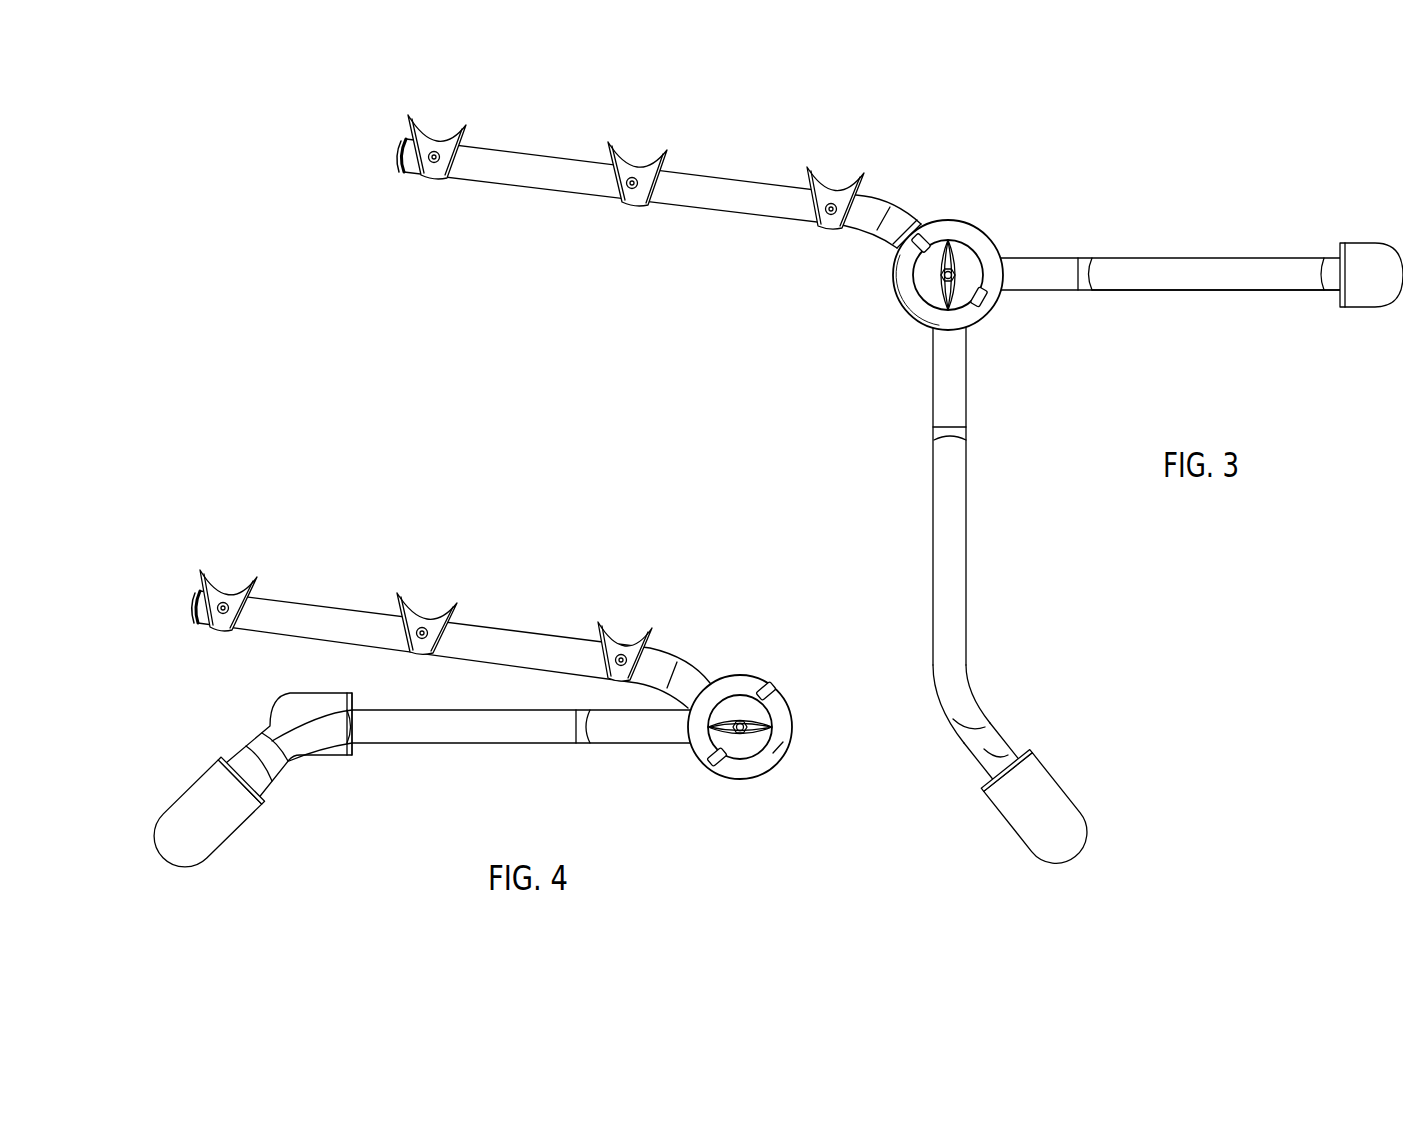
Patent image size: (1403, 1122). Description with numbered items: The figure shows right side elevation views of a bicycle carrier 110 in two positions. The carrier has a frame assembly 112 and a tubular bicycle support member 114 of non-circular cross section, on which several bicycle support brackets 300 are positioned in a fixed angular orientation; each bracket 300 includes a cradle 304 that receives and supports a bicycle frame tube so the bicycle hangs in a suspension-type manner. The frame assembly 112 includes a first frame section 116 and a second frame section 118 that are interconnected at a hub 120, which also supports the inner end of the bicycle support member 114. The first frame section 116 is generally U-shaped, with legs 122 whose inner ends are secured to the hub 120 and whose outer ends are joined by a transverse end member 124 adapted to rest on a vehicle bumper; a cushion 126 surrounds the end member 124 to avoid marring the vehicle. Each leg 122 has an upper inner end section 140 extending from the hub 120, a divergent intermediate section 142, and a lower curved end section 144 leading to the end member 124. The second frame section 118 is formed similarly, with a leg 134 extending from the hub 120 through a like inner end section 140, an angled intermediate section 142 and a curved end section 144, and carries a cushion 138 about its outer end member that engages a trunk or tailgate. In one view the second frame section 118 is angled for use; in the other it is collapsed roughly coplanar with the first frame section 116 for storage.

In FIG. 3, the bicycle carrier 110 is at (1058, 131).
In FIG. 3, the frame assembly 112 is at (887, 328).
In FIG. 4, the frame assembly 112 is at (689, 784).
In FIG. 3, the bicycle support member 114 is at (639, 244).
In FIG. 4, the bicycle support member 114 is at (352, 572).
In FIG. 3, the first frame section 116 is at (1002, 471).
In FIG. 4, the first frame section 116 is at (313, 812).
In FIG. 3, the second frame section 118 is at (1216, 202).
In FIG. 4, the second frame section 118 is at (265, 675).
In FIG. 3, the hub 120 is at (945, 204).
In FIG. 4, the hub 120 is at (758, 651).
In FIG. 3, the leg 122 is at (918, 533).
In FIG. 3, the transverse end member 124 is at (1007, 757).
In FIG. 3, the cushion 126 is at (1080, 822).
In FIG. 4, the cushion 126 is at (200, 840).
In FIG. 3, the leg 134 is at (1263, 304).
In FIG. 3, the cushion 138 is at (1387, 303).
In FIG. 4, the cushion 138 is at (302, 697).
In FIG. 3, the inner end section 140 is at (1060, 267).
In FIG. 3, the intermediate section 142 is at (1280, 267).
In FIG. 3, the curved end section 144 is at (957, 717).
In FIG. 3, the bicycle support bracket 300 is at (467, 133).
In FIG. 4, the bicycle support bracket 300 is at (215, 570).
In FIG. 3, the cradle 304 is at (416, 113).